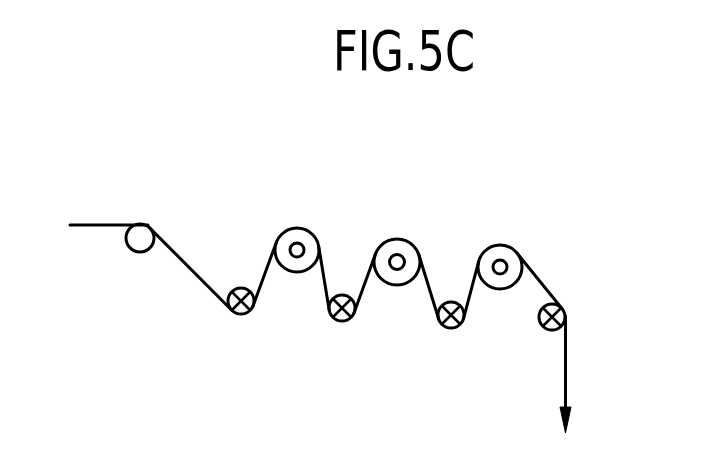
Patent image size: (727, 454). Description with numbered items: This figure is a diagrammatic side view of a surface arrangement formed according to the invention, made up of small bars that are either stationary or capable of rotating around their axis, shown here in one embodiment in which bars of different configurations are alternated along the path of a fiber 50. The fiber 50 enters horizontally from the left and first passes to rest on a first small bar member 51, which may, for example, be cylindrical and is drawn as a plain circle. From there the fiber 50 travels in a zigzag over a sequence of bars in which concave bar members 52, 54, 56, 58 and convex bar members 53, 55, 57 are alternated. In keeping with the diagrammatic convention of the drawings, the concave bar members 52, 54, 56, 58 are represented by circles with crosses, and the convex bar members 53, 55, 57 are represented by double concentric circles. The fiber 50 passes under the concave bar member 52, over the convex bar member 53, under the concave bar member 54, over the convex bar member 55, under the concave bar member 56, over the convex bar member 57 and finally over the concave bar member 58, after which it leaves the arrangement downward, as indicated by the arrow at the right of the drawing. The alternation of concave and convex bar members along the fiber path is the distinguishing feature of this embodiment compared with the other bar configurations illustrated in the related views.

The fiber 50 is at (98, 223).
The first small bar member 51 is at (142, 252).
The concave bar member 52 is at (240, 317).
The convex bar member 53 is at (302, 230).
The concave bar member 54 is at (345, 326).
The convex bar member 55 is at (395, 239).
The concave bar member 56 is at (455, 330).
The convex bar member 57 is at (500, 244).
The concave bar member 58 is at (548, 332).